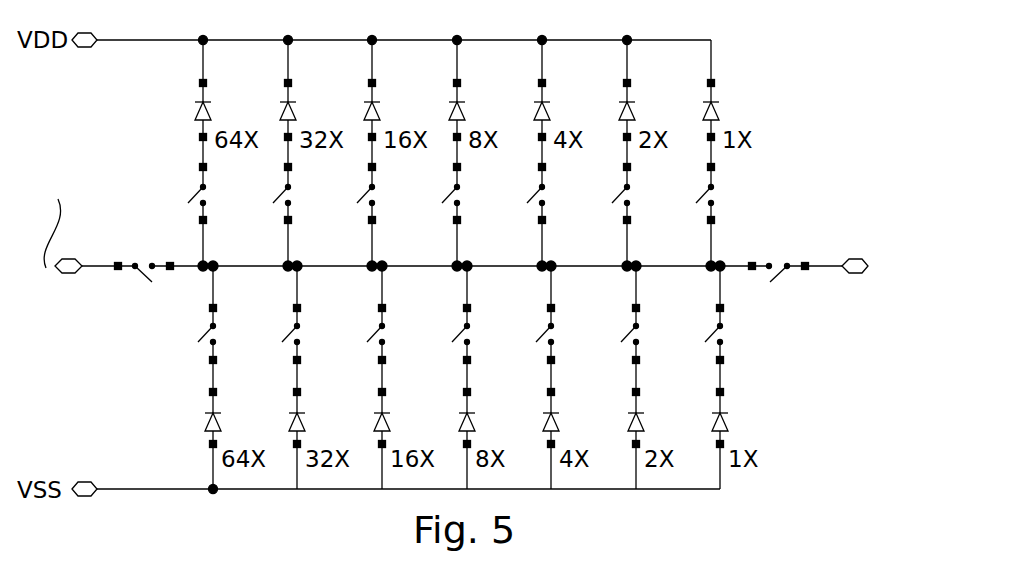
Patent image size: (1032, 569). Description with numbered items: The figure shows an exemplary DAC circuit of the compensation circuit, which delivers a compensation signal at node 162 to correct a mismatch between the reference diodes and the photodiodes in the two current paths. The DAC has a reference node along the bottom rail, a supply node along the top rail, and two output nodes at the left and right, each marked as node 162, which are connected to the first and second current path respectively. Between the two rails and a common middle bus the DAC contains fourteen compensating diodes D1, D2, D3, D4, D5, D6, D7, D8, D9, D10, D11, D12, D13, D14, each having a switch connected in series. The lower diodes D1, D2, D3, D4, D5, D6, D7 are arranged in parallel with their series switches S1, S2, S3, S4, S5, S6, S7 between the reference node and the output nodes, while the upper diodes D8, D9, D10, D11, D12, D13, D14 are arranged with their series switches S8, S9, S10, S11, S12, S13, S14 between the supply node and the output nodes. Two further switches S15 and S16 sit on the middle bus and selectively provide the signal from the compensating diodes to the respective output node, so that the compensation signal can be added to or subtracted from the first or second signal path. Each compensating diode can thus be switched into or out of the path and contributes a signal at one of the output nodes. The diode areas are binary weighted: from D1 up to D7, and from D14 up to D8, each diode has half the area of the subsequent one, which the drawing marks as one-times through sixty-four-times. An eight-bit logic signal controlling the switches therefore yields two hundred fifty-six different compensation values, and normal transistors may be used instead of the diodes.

The node 162 is at (68, 275).
The compensating diode D1 is at (702, 429).
The compensating diode D2 is at (618, 429).
The compensating diode D3 is at (533, 429).
The compensating diode D4 is at (449, 429).
The compensating diode D5 is at (364, 429).
The compensating diode D6 is at (279, 429).
The compensating diode D7 is at (195, 429).
The compensating diode D8 is at (185, 116).
The compensating diode D9 is at (270, 116).
The compensating diode D10 is at (346, 116).
The compensating diode D11 is at (431, 116).
The compensating diode D12 is at (516, 116).
The compensating diode D13 is at (601, 116).
The compensating diode D14 is at (685, 116).
The switch S1 is at (732, 335).
The switch S2 is at (648, 335).
The switch S3 is at (563, 335).
The switch S4 is at (479, 335).
The switch S5 is at (394, 335).
The switch S6 is at (309, 335).
The switch S7 is at (225, 335).
The switch S8 is at (214, 195).
The switch S9 is at (299, 195).
The switch S10 is at (391, 195).
The switch S11 is at (476, 195).
The switch S12 is at (561, 195).
The switch S13 is at (646, 195).
The switch S14 is at (730, 195).
The switch S15 is at (144, 258).
The switch S16 is at (785, 258).